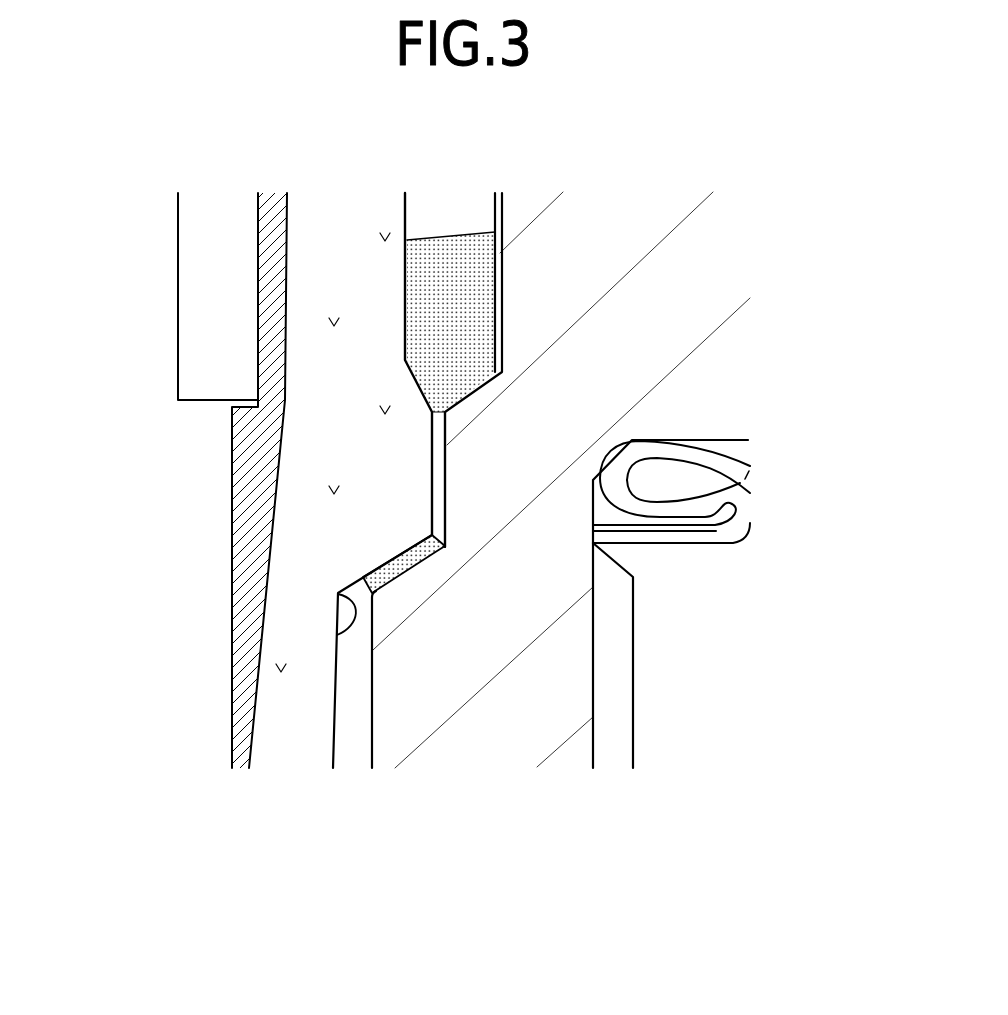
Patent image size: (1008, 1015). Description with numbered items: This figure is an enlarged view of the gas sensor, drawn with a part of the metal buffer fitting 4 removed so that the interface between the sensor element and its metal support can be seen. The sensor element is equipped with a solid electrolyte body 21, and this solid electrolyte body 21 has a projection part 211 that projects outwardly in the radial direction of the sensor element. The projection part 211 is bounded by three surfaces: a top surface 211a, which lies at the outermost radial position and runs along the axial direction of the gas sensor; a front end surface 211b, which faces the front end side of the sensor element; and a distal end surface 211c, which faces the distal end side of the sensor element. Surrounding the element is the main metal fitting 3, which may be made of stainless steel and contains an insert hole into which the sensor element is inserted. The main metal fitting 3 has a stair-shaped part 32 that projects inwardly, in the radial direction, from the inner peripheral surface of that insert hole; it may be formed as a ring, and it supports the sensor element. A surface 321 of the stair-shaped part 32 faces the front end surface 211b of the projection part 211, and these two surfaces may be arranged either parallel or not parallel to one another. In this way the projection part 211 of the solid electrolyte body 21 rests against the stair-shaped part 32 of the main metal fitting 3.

The solid electrolyte body 21 is at (337, 233).
The projection part 211 is at (445, 493).
The top surface 211a is at (445, 457).
The front end surface 211b is at (345, 625).
The distal end surface 211c is at (413, 370).
The main metal fitting 3 is at (700, 275).
The stair-shaped part 32 is at (410, 602).
The surface of the stair-shaped part 321 is at (413, 567).
The buffer fitting 4 is at (408, 595).